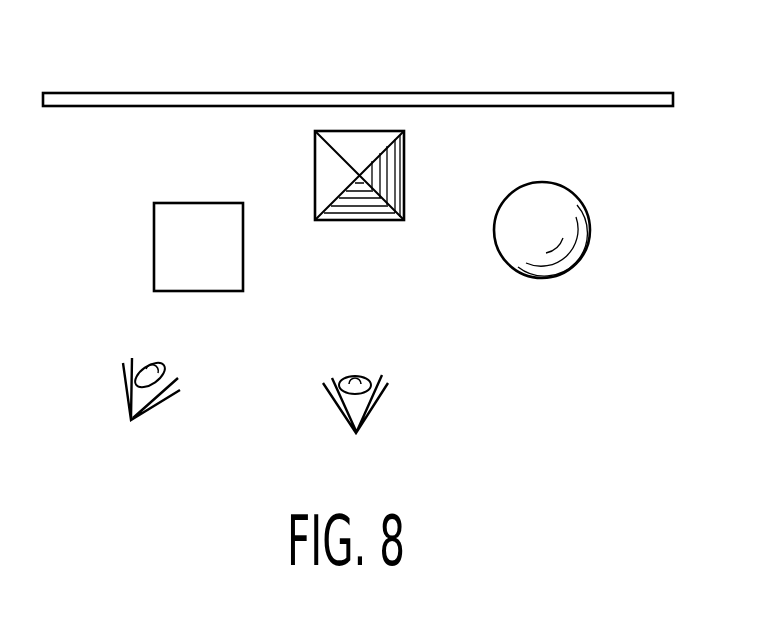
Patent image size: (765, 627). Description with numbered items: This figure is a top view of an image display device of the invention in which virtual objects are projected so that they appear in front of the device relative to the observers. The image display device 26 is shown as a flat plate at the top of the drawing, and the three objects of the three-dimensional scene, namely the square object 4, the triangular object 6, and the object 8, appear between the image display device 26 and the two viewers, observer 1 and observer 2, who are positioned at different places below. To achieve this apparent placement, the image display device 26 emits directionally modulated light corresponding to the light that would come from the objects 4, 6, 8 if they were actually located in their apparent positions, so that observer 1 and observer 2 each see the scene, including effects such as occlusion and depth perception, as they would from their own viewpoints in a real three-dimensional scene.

The image display device 26 is at (652, 93).
The triangular object 6 is at (404, 173).
The square object 4 is at (243, 268).
The object 8 is at (590, 230).
The observer 1 is at (375, 413).
The observer 2 is at (148, 408).